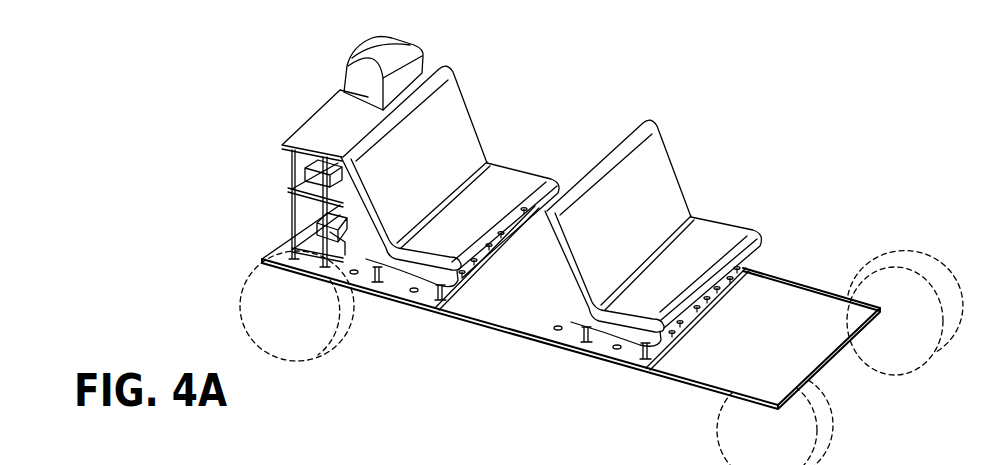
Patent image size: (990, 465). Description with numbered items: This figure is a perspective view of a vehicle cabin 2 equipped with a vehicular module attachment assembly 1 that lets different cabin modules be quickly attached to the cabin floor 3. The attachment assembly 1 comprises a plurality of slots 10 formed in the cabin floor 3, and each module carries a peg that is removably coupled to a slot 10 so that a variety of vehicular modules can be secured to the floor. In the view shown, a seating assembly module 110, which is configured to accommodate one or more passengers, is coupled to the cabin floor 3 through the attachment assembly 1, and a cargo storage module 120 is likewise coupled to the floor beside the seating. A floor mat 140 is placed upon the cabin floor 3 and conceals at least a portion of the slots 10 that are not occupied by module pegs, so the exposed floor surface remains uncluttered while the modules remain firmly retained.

The vehicular module attachment assembly 1 is at (593, 246).
The vehicle cabin 2 is at (516, 220).
The cabin floor 3 is at (737, 293).
The slots 10 is at (646, 357).
The seating assembly module 110 is at (440, 122).
The cargo storage module 120 is at (326, 128).
The floor mat 140 is at (514, 303).